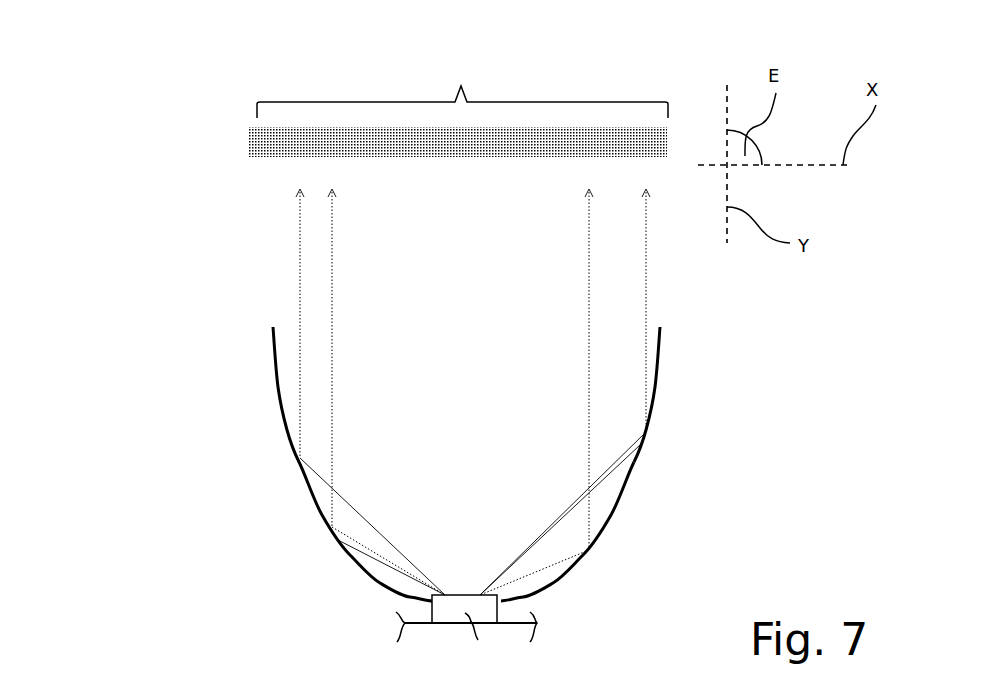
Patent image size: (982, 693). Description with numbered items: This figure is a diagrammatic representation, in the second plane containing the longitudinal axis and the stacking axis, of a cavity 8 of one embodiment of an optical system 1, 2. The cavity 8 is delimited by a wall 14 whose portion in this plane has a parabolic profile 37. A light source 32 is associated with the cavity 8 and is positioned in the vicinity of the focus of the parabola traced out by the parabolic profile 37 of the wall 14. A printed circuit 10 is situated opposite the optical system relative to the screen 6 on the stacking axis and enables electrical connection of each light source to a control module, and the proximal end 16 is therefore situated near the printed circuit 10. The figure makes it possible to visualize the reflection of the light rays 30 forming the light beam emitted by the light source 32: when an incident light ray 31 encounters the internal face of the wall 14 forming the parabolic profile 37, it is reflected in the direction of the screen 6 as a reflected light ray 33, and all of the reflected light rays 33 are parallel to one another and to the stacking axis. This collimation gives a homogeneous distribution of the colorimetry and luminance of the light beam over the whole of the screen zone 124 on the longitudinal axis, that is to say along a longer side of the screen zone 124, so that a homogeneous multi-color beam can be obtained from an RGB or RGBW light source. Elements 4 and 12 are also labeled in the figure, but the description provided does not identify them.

The optical system 1 is at (190, 245).
The optical system 2 is at (190, 245).
The reflector 4 is at (210, 457).
The screen 6 is at (286, 150).
The cavity 8 is at (367, 440).
The printed circuit 10 is at (437, 623).
The light exit opening 12 is at (434, 321).
The wall 14 is at (605, 527).
The proximal end 16 is at (349, 598).
The light rays 30 is at (772, 350).
The incident light ray 31 is at (612, 462).
The light source 32 is at (472, 623).
The reflected light ray 33 is at (645, 343).
The parabolic profile 37 is at (334, 540).
The screen zone 124 is at (462, 84).